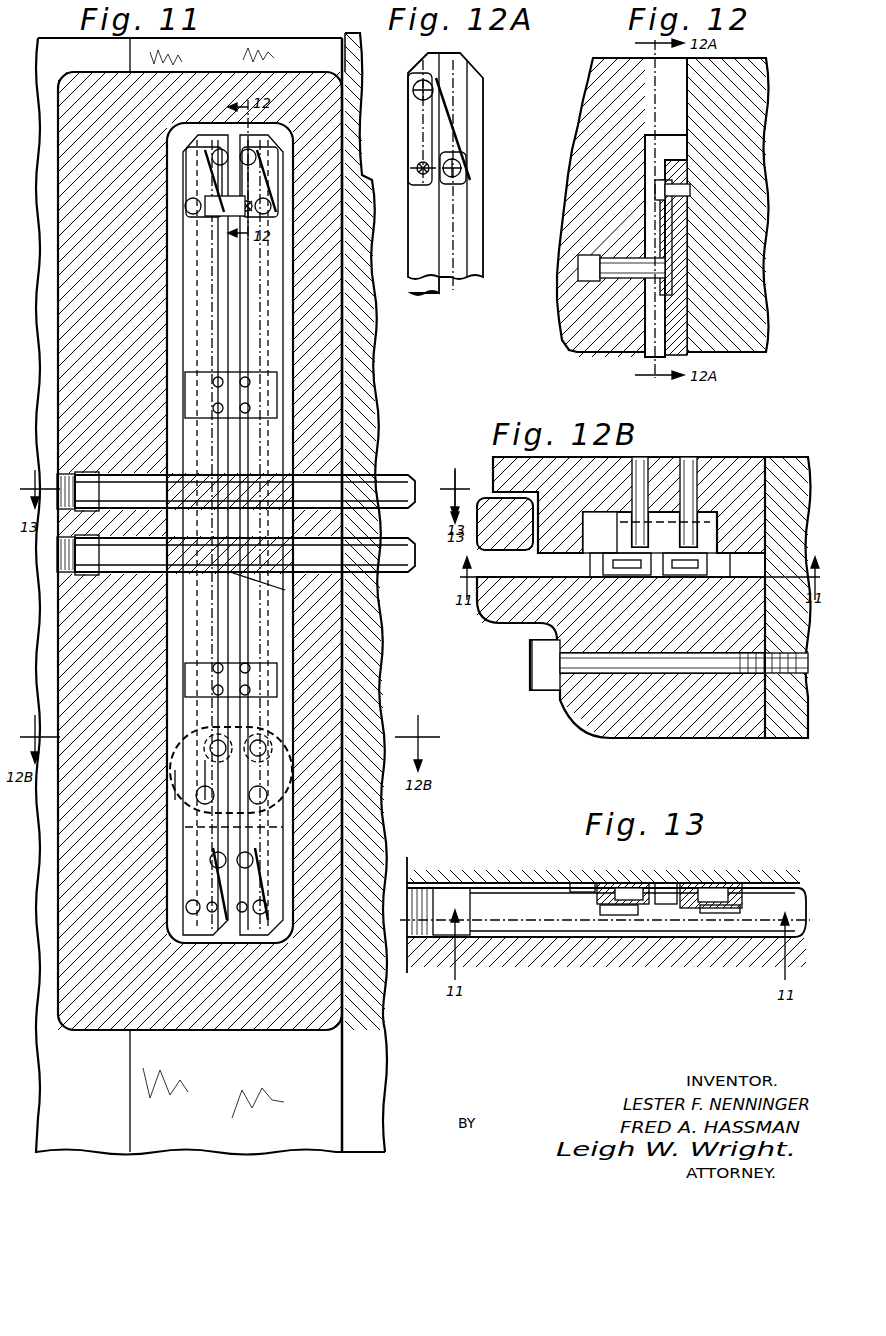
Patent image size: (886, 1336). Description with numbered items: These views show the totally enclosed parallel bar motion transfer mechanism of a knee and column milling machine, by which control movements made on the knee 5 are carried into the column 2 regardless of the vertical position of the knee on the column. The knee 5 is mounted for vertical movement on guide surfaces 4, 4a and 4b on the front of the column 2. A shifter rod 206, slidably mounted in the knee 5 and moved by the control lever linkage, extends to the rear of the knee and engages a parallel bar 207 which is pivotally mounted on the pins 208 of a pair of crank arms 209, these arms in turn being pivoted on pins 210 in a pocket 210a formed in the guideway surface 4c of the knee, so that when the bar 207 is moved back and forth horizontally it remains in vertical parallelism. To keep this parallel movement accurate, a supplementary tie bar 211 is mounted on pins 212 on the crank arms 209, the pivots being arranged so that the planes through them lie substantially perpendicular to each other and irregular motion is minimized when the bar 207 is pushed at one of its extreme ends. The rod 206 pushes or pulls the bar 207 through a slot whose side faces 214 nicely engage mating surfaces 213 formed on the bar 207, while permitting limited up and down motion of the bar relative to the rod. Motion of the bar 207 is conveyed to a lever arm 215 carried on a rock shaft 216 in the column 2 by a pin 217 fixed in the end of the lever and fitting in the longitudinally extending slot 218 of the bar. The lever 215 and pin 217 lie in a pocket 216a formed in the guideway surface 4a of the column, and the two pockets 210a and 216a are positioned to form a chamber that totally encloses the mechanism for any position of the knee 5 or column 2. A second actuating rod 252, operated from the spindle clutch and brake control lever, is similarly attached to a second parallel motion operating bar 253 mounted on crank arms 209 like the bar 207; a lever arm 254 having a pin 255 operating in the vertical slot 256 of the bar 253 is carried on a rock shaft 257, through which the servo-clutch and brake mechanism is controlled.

In FIG. 11, the column 2 is at (55, 40).
In FIG. 12, the column 2 is at (745, 332).
In FIG. 12B, the column 2 is at (735, 458).
In FIG. 13, the column 2 is at (760, 880).
In FIG. 11, the guide surface 4 is at (342, 1098).
In FIG. 12B, the guide surface 4 is at (760, 490).
In FIG. 11, the guide surface 4a is at (300, 1065).
In FIG. 12, the guide surface 4a is at (688, 150).
In FIG. 12B, the guide surface 4a is at (752, 575).
In FIG. 11, the guide surface 4b is at (128, 1074).
In FIG. 12, the guide surface 4b is at (692, 116).
In FIG. 12B, the guide surface 4b is at (540, 519).
In FIG. 12B, the guideway surface 4c is at (750, 555).
In FIG. 11, the knee 5 is at (333, 360).
In FIG. 12, the knee 5 is at (572, 226).
In FIG. 12B, the knee 5 is at (507, 616).
In FIG. 13, the knee 5 is at (565, 955).
In FIG. 11, the shifter rod 206 is at (378, 573).
In FIG. 13, the shifter rod 206 is at (665, 882).
In FIG. 11, the parallel bar 207 is at (278, 172).
In FIG. 12A, the parallel bar 207 is at (476, 94).
In FIG. 12, the parallel bar 207 is at (680, 302).
In FIG. 12B, the parallel bar 207 is at (715, 570).
In FIG. 13, the parallel bar 207 is at (690, 912).
In FIG. 11, the pin 208 is at (218, 150).
In FIG. 12A, the pin 208 is at (413, 88).
In FIG. 12, the pin 208 is at (690, 190).
In FIG. 11, the crank arm 209 is at (247, 200).
In FIG. 12A, the crank arm 209 is at (412, 125).
In FIG. 12, the crank arm 209 is at (672, 230).
In FIG. 11, the pin 210 is at (212, 201).
In FIG. 12A, the pin 210 is at (418, 165).
In FIG. 12, the pin 210 is at (620, 270).
In FIG. 11, the pocket 210a is at (170, 680).
In FIG. 12, the pocket 210a is at (648, 180).
In FIG. 12B, the pocket 210a is at (648, 585).
In FIG. 13, the pocket 210a is at (578, 880).
In FIG. 11, the tie bar 211 is at (190, 285).
In FIG. 12A, the tie bar 211 is at (460, 200).
In FIG. 13, the tie bar 211 is at (618, 915).
In FIG. 11, the pin 212 is at (186, 206).
In FIG. 12A, the pin 212 is at (462, 168).
In FIG. 11, the mating surface 213 is at (256, 492).
In FIG. 13, the mating surface 213 is at (660, 915).
In FIG. 11, the side face 214 is at (268, 578).
In FIG. 13, the side face 214 is at (712, 882).
In FIG. 11, the lever arm 215 is at (268, 780).
In FIG. 12B, the lever arm 215 is at (705, 532).
In FIG. 11, the rock shaft 216 is at (285, 725).
In FIG. 12B, the rock shaft 216 is at (690, 500).
In FIG. 11, the pocket 216a is at (176, 788).
In FIG. 12B, the pocket 216a is at (600, 530).
In FIG. 11, the pin 217 is at (268, 800).
In FIG. 12B, the pin 217 is at (675, 576).
In FIG. 11, the slot 218 is at (258, 935).
In FIG. 12A, the slot 218 is at (455, 70).
In FIG. 12B, the slot 218 is at (690, 575).
In FIG. 13, the slot 218 is at (705, 912).
In FIG. 11, the actuating rod 252 is at (400, 482).
In FIG. 13, the actuating rod 252 is at (497, 890).
In FIG. 11, the parallel motion operating bar 253 is at (190, 148).
In FIG. 12B, the parallel motion operating bar 253 is at (605, 565).
In FIG. 13, the parallel motion operating bar 253 is at (610, 882).
In FIG. 11, the lever arm 254 is at (200, 762).
In FIG. 12B, the lever arm 254 is at (632, 535).
In FIG. 11, the pin 255 is at (198, 800).
In FIG. 12B, the pin 255 is at (637, 580).
In FIG. 11, the vertical slot 256 is at (207, 935).
In FIG. 13, the vertical slot 256 is at (640, 880).
In FIG. 11, the rock shaft 257 is at (205, 740).
In FIG. 12B, the rock shaft 257 is at (632, 492).